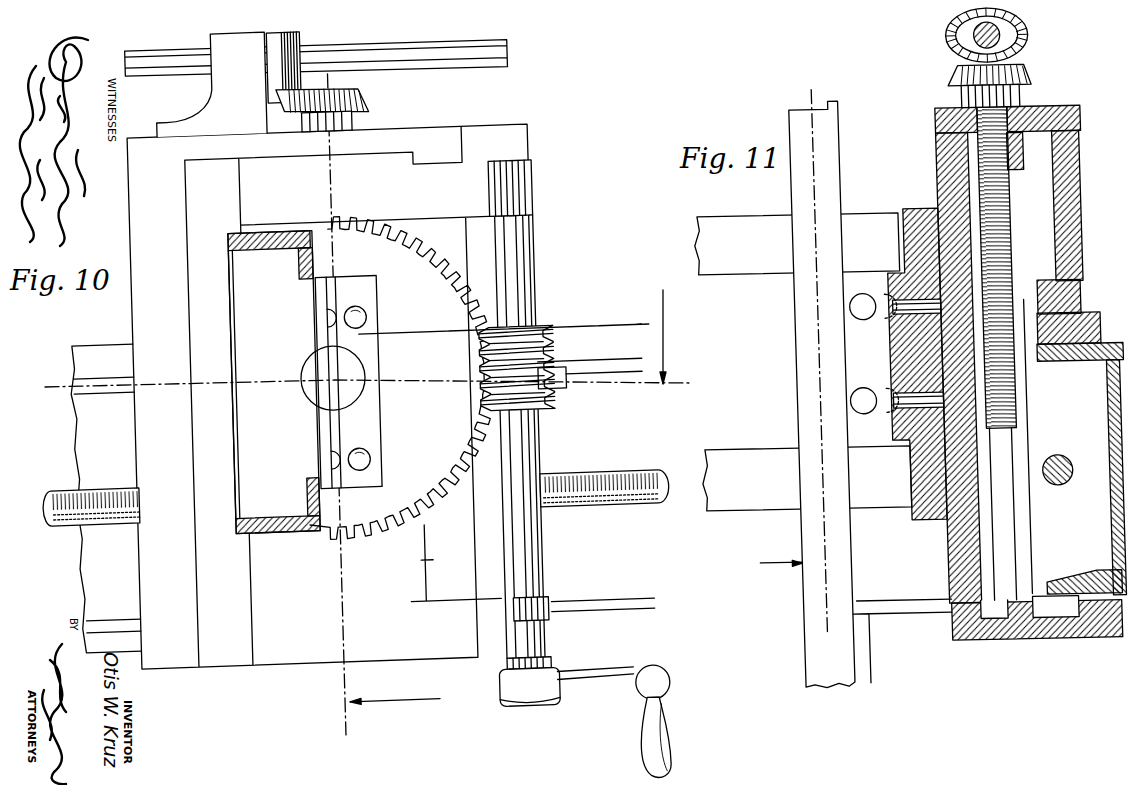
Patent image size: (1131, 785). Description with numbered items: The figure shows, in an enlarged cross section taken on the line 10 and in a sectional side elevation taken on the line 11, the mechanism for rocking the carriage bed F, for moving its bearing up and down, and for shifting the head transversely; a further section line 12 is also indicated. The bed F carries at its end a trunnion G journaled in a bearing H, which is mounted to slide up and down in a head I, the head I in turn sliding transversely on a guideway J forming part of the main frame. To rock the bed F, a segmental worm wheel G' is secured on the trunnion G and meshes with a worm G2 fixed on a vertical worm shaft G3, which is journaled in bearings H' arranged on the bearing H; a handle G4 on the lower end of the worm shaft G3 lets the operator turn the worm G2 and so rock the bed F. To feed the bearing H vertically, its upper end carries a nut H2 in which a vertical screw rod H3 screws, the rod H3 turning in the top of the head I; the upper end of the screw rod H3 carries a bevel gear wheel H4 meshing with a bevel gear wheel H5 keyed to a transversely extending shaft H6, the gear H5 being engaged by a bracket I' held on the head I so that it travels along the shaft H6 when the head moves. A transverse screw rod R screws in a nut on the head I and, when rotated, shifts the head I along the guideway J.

In FIG. 10, the head I is at (324, 397).
In FIG. 11, the head I is at (1029, 372).
In FIG. 10, the bracket I' is at (210, 84).
In FIG. 10, the bearing H is at (455, 561).
In FIG. 11, the bearing H is at (945, 368).
In FIG. 10, the bearing H' is at (532, 433).
In FIG. 11, the nut H2 is at (1017, 155).
In FIG. 11, the screw rod H3 is at (1009, 232).
In FIG. 10, the bevel gear wheel H4 is at (375, 104).
In FIG. 11, the bevel gear wheel H4 is at (1035, 79).
In FIG. 10, the bevel gear wheel H5 is at (288, 94).
In FIG. 11, the bevel gear wheel H5 is at (1035, 37).
In FIG. 10, the shaft H6 is at (498, 67).
In FIG. 11, the shaft H6 is at (983, 39).
In FIG. 10, the trunnion G is at (305, 380).
In FIG. 11, the trunnion G is at (896, 364).
In FIG. 10, the segmental worm wheel G' is at (400, 375).
In FIG. 10, the worm G2 is at (547, 341).
In FIG. 10, the worm shaft G3 is at (523, 280).
In FIG. 10, the handle G4 is at (574, 695).
In FIG. 11, the bed F is at (763, 255).
In FIG. 10, the guideway J is at (77, 416).
In FIG. 11, the guideway J is at (1109, 407).
In FIG. 10, the screw rod R is at (57, 482).
In FIG. 11, the screw rod R is at (1053, 485).
In FIG. 11, the section line 10 is at (850, 378).
In FIG. 10, the section line 11 is at (377, 398).
In FIG. 10, the section line 12 is at (365, 344).